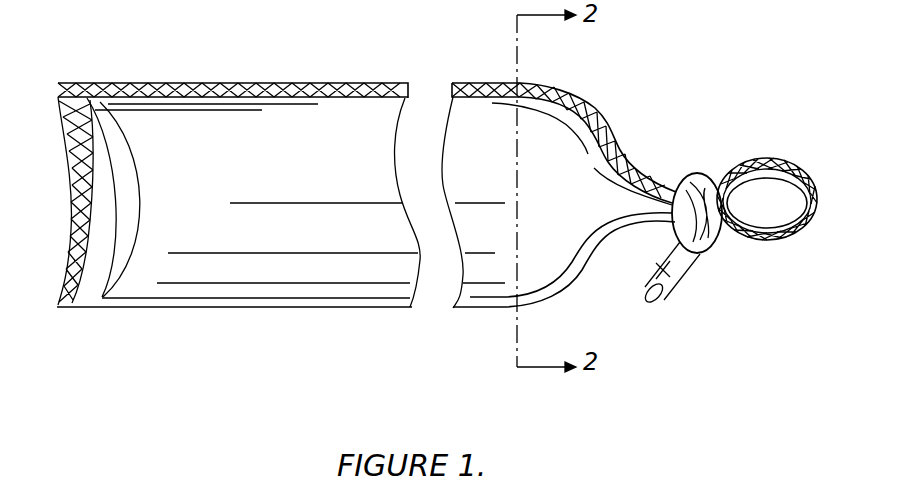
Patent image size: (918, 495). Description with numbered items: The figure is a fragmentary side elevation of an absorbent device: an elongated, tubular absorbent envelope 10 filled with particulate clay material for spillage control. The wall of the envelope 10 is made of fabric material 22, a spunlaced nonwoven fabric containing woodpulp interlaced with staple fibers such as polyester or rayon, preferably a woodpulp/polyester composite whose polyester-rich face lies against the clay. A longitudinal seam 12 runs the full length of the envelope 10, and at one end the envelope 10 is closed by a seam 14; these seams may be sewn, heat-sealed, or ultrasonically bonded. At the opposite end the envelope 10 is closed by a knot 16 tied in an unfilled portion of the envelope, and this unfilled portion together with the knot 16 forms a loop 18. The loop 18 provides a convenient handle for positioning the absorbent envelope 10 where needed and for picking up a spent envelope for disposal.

The absorbent envelope 10 is at (286, 72).
The seam 12 is at (146, 83).
The seam 14 is at (58, 306).
The knot 16 is at (710, 172).
The loop 18 is at (764, 230).
The fabric material 22 is at (262, 253).